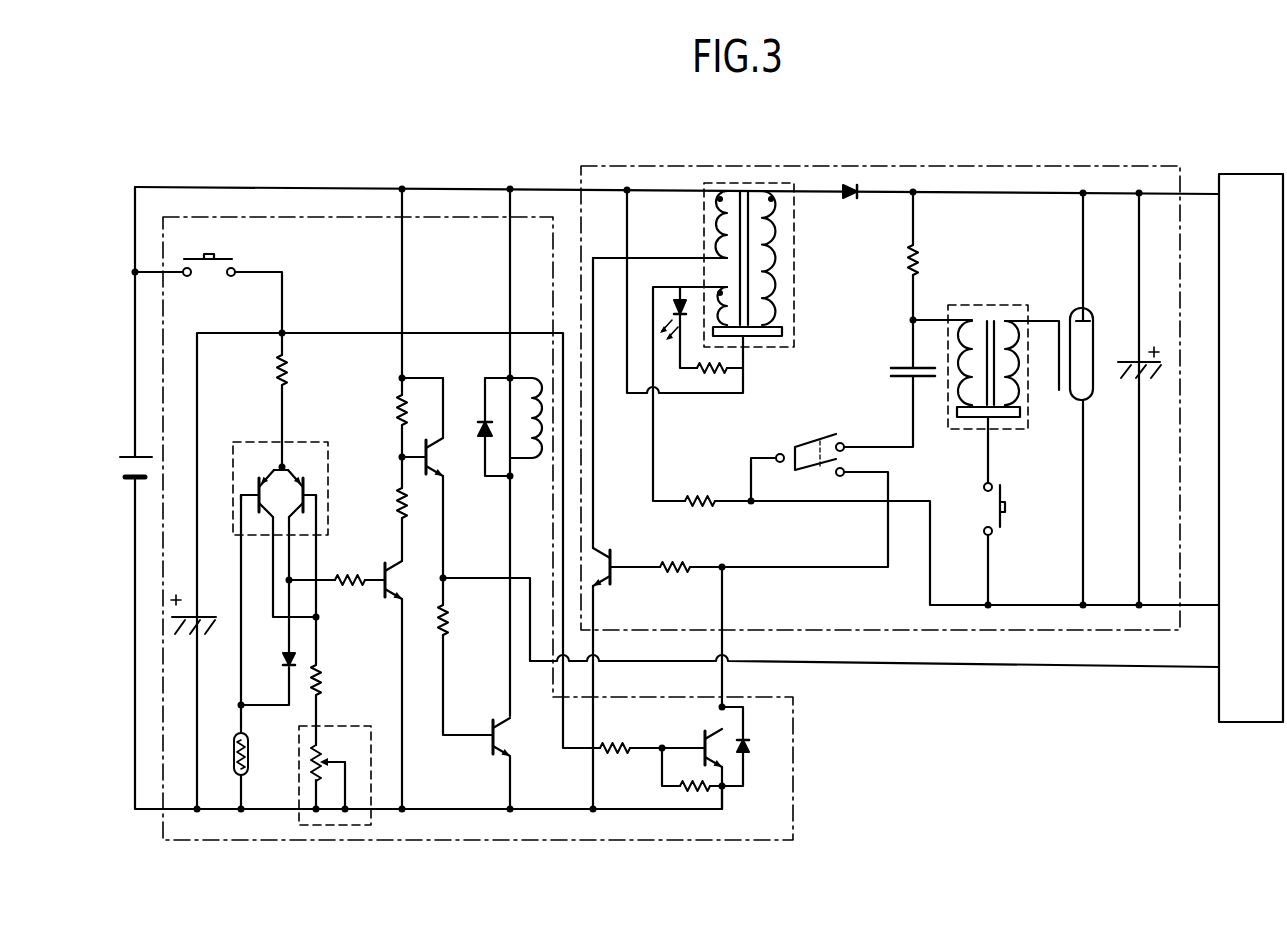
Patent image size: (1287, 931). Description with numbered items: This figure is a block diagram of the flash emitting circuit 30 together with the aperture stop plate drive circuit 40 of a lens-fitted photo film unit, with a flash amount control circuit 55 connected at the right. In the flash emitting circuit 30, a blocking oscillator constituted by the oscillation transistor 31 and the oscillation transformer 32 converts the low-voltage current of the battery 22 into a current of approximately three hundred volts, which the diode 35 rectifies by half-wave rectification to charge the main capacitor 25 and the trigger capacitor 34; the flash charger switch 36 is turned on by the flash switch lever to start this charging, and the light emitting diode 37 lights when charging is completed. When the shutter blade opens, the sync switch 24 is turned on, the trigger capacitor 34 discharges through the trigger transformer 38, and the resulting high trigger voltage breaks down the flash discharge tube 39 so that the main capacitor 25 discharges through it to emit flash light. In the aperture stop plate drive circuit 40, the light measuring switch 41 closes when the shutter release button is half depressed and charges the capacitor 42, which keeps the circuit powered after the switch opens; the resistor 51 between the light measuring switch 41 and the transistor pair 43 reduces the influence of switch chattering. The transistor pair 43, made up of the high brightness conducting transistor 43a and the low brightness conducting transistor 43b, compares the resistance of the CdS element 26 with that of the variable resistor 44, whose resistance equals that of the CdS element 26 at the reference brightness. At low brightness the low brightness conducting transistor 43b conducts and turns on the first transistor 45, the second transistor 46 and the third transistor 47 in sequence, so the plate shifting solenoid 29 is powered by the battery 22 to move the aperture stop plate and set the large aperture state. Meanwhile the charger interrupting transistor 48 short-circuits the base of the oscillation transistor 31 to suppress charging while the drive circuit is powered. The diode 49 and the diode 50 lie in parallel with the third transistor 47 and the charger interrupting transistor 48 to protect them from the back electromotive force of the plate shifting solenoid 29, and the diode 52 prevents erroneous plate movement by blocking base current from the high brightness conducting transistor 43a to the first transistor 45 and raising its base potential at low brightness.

The battery 22 is at (125, 420).
The sync switch 24 is at (1001, 527).
The main capacitor 25 is at (1136, 360).
The CdS element 26 is at (234, 750).
The plate shifting solenoid 29 is at (528, 460).
The flash emitting circuit 30 is at (815, 165).
The oscillation transistor 31 is at (612, 553).
The oscillation transformer 32 is at (794, 310).
The trigger capacitor 34 is at (891, 367).
The diode 35 is at (857, 199).
The flash charger switch 36 is at (795, 448).
The light emitting diode 37 is at (679, 300).
The trigger transformer 38 is at (981, 305).
The flash discharge tube 39 is at (1071, 395).
The aperture stop plate drive circuit 40 is at (793, 812).
The light measuring switch 41 is at (238, 258).
The capacitor 42 is at (197, 617).
The transistor pair 43 is at (326, 442).
The high brightness conducting transistor 43a is at (258, 482).
The low brightness conducting transistor 43b is at (306, 480).
The variable resistor 44 is at (371, 770).
The first transistor 45 is at (384, 568).
The second transistor 46 is at (428, 470).
The third transistor 47 is at (491, 722).
The charger interrupting transistor 48 is at (703, 735).
The diode 49 is at (485, 418).
The diode 50 is at (750, 745).
The resistor 51 is at (280, 366).
The diode 52 is at (288, 670).
The flash amount control circuit 55 is at (1247, 724).